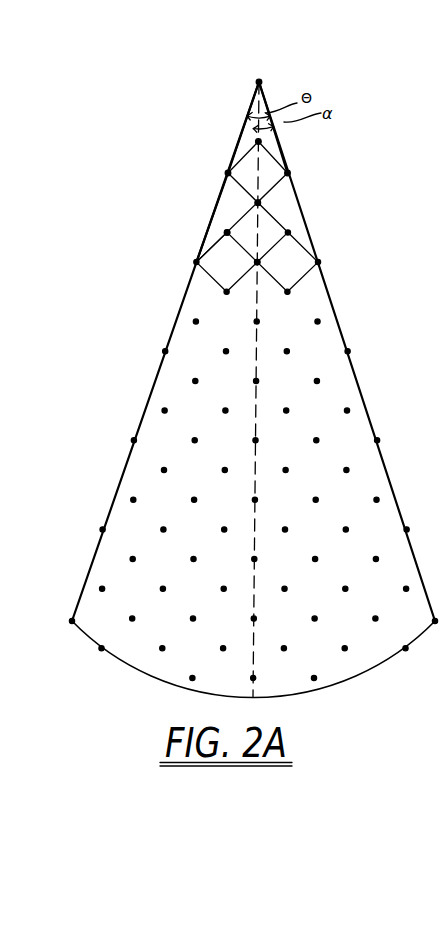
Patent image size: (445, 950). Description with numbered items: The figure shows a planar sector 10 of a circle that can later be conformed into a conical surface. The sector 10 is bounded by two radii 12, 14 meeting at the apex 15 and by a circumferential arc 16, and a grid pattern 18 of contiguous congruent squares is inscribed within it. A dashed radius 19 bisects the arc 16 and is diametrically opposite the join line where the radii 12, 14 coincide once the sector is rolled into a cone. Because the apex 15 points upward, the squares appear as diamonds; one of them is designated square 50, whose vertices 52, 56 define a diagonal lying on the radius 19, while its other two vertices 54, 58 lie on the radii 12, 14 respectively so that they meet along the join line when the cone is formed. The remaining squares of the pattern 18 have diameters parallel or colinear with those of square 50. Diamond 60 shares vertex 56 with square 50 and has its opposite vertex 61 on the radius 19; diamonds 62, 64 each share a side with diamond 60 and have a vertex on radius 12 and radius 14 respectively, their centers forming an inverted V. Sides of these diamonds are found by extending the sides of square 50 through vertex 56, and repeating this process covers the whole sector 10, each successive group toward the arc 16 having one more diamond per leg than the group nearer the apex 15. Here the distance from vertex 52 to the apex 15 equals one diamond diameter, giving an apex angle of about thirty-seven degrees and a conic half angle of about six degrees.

The planar sector 10 is at (313, 245).
The radius 12 is at (176, 316).
The radius 14 is at (341, 337).
The apex 15 is at (259, 82).
The circumferential arc 16 is at (358, 675).
The grid pattern 18 is at (226, 231).
The radius 19 is at (257, 463).
The square 50 is at (236, 150).
The vertex 52 is at (282, 152).
The vertex 54 is at (228, 173).
The vertex 56 is at (259, 203).
The vertex 58 is at (288, 173).
The diamond 60 is at (218, 205).
The vertex 61 is at (257, 264).
The diamond 62 is at (205, 245).
The diamond 64 is at (307, 273).